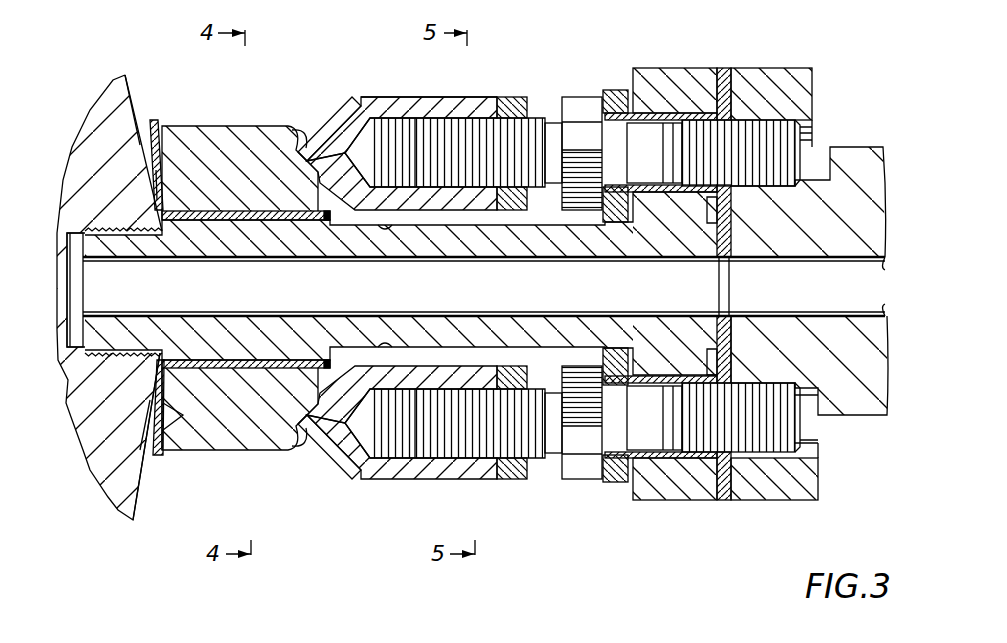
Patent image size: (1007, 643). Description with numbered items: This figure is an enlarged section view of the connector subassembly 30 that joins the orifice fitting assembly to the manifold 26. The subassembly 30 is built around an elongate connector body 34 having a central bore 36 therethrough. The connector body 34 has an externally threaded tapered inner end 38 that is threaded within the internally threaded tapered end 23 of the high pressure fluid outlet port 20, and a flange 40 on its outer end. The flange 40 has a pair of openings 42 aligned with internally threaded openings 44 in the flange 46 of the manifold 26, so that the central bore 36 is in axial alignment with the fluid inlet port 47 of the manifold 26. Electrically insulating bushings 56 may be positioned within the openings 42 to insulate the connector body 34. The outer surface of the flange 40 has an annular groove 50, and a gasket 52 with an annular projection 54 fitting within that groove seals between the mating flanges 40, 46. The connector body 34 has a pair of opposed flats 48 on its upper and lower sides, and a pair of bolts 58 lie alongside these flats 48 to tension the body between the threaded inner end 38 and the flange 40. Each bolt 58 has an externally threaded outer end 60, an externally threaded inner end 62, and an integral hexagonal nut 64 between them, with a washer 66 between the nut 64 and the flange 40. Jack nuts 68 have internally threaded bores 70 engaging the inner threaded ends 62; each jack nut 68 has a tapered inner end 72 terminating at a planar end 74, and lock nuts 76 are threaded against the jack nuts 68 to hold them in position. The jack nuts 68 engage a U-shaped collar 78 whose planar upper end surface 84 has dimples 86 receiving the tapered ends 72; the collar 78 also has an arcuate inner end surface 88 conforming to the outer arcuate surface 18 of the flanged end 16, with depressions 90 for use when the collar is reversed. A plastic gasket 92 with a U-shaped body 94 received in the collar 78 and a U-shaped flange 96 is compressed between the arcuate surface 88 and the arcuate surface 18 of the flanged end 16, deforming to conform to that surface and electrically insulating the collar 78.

The flanged end 16 is at (136, 84).
The outer arcuate surface 18 is at (141, 108).
The high pressure fluid outlet port 20 is at (73, 270).
The internally threaded tapered end 23 is at (150, 238).
The manifold 26 is at (812, 80).
The connector subassembly 30 is at (467, 62).
The connector body 34 is at (227, 232).
The central bore 36 is at (240, 308).
The externally threaded tapered inner end 38 is at (72, 418).
The flange 40 is at (690, 502).
The openings 42 is at (655, 70).
The internally threaded openings 44 is at (782, 170).
The flange of manifold 46 is at (773, 78).
The fluid inlet port 47 is at (868, 262).
The flats 48 is at (385, 232).
The annular groove 50 is at (713, 323).
The gasket 52 is at (731, 313).
The annular projection 54 is at (770, 322).
The electrically insulating bushings 56 is at (708, 480).
The bolts 58 is at (542, 116).
The externally threaded outer end 60 is at (740, 125).
The externally threaded inner end 62 is at (465, 118).
The integral hexagonal nut 64 is at (580, 100).
The washer 66 is at (611, 90).
The jack nuts 68 is at (390, 97).
The internally threaded bore 70 is at (410, 118).
The tapered inner end 72 is at (345, 100).
The planar end 74 is at (297, 150).
The lock nuts 76 is at (520, 97).
The U-shaped collar 78 is at (232, 443).
The planar upper end surface 84 is at (332, 221).
The dimples 86 is at (318, 134).
The arcuate inner end surface 88 is at (154, 186).
The depressions 90 is at (160, 124).
The plastic gasket 92 is at (202, 373).
The U-shaped body 94 is at (201, 413).
The U-shaped flange 96 is at (140, 450).